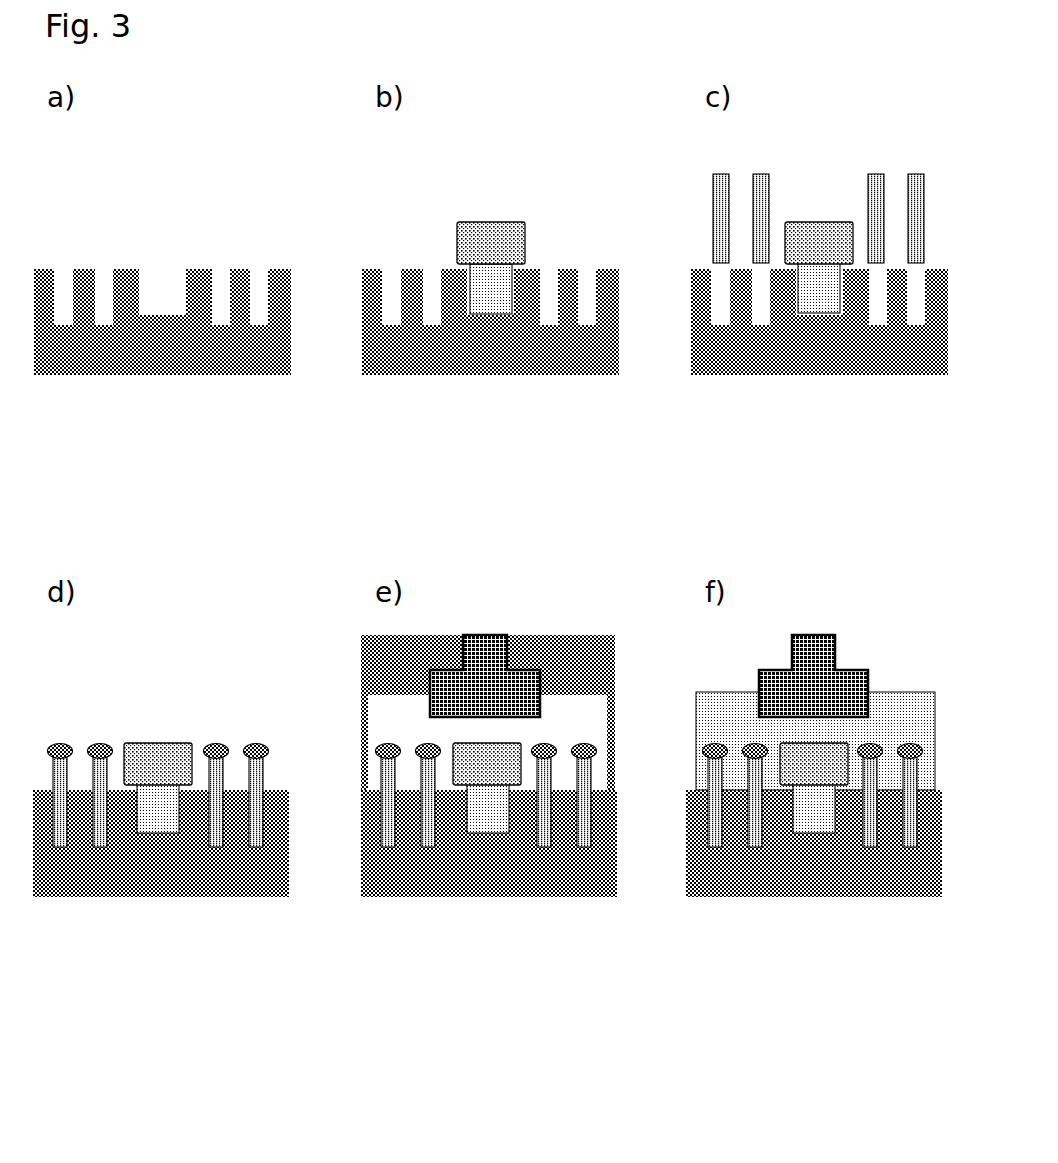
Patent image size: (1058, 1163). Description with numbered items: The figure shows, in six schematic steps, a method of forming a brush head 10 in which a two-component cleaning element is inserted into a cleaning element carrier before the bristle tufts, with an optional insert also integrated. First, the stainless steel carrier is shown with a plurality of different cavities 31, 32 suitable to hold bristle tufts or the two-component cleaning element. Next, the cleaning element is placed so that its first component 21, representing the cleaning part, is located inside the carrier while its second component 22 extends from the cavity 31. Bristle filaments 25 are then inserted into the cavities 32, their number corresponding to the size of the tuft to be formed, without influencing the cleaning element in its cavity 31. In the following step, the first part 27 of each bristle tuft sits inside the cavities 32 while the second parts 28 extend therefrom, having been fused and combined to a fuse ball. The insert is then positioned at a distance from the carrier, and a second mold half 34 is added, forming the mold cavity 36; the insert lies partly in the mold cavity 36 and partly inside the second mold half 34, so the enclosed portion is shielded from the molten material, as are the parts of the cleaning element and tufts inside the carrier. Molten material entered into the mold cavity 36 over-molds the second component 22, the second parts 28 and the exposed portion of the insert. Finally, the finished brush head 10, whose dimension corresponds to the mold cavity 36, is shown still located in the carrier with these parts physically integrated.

The brush head 10 is at (910, 725).
The first component 21 is at (495, 285).
The second component 22 is at (481, 232).
The bristle filaments 25 is at (876, 165).
The first part 27 is at (98, 820).
The second parts 28 is at (61, 746).
The cavity 31 is at (153, 285).
The cavities 32 is at (219, 283).
The second mold half 34 is at (559, 662).
The mold cavity 36 is at (566, 723).